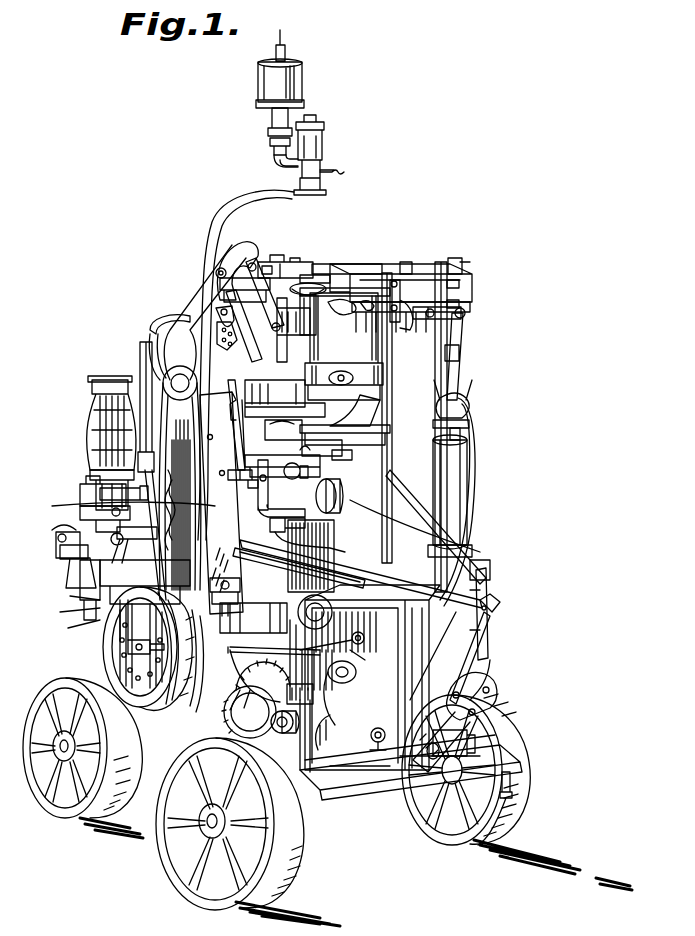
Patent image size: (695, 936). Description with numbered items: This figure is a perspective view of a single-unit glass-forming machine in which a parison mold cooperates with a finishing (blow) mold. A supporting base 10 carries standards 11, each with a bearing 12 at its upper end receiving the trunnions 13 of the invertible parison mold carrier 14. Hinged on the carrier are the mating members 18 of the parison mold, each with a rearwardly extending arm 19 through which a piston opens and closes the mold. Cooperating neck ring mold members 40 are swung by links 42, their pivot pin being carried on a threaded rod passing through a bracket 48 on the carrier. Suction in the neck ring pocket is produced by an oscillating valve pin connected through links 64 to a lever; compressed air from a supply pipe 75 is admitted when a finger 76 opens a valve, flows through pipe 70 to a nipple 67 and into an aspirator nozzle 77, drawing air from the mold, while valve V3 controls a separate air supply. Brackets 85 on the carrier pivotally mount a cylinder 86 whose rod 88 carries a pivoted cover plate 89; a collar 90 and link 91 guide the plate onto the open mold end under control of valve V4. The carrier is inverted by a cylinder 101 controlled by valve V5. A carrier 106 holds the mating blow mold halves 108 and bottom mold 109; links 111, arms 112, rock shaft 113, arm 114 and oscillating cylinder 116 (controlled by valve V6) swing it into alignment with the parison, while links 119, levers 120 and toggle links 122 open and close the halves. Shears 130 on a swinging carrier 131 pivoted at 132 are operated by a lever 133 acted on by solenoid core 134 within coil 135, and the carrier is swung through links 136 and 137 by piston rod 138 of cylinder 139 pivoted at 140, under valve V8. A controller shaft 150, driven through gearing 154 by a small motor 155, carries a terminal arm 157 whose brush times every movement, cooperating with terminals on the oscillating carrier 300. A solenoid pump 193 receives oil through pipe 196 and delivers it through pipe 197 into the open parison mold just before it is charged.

The supporting base 10 is at (400, 790).
The standards 11 is at (122, 529).
The bearing 12 is at (140, 346).
The trunnions 13 is at (202, 417).
The parison mold carrier 14 is at (168, 330).
The mating members of the parison mold 18 is at (345, 332).
The rearwardly extending arm 19 is at (285, 410).
The mating members of the neck ring mold 40 is at (388, 430).
The links 42 is at (386, 372).
The bracket 48 is at (372, 414).
The links 64 is at (345, 484).
The nipple 67 is at (297, 535).
The pipe 70 is at (248, 505).
The supply pipe 75 is at (243, 461).
The finger 76 is at (352, 440).
The aspirator nozzle 77 is at (268, 488).
The brackets 85 is at (248, 246).
The cylinder 86 is at (214, 222).
The piston rod 88 is at (300, 262).
The cover plate 89 is at (318, 284).
The collar 90 is at (282, 264).
The link 91 is at (310, 275).
The cylinder 101 is at (262, 632).
The carrier 106 is at (120, 590).
The mating halves of the blow mold 108 is at (96, 386).
The bottom mold 109 is at (110, 448).
The links 111 is at (252, 548).
The arms 112 is at (349, 641).
The rock shaft 113 is at (360, 652).
The arm 114 is at (440, 565).
The oscillating cylinder 116 is at (380, 785).
The links 119 is at (88, 478).
The levers 120 is at (86, 588).
The toggle links 122 is at (72, 562).
The shears 130 is at (376, 272).
The swinging carrier 131 is at (466, 340).
The pivot 132 is at (490, 600).
The lever 133 is at (450, 292).
The solenoid core 134 is at (462, 433).
The coil 135 is at (468, 470).
The link 136 is at (486, 570).
The link 137 is at (496, 610).
The piston rod 138 is at (480, 650).
The cylinder 139 is at (496, 682).
The pivot 140 is at (372, 677).
The controller shaft 150 is at (138, 660).
The gearing 154 is at (277, 694).
The small motor 155 is at (168, 766).
The terminal arm 157 is at (126, 648).
The solenoid pump 193 is at (326, 134).
The pipe 196 is at (280, 162).
The pipe 197 is at (338, 171).
The oscillating carrier 300 is at (219, 324).
The valve V3 is at (299, 568).
The valve V4 is at (222, 306).
The valve V5 is at (225, 594).
The valve V6 is at (358, 680).
The valve V8 is at (440, 810).